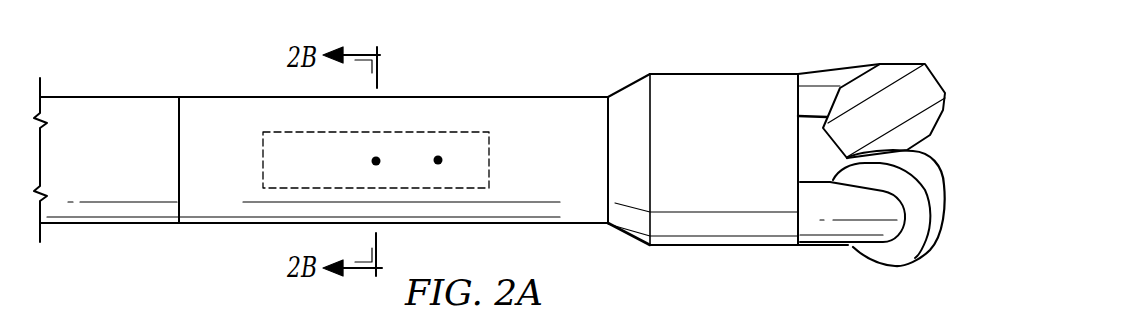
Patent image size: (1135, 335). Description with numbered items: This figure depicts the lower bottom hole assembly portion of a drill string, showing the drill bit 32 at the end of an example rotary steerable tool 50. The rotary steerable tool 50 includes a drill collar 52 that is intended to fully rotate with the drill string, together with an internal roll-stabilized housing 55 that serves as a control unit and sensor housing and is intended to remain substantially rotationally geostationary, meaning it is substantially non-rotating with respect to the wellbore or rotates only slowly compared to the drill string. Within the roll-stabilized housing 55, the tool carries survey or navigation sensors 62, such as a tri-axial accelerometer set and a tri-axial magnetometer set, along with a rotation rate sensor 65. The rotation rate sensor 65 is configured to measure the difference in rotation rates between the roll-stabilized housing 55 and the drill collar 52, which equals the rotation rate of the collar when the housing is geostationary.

The drill bit 32 is at (725, 73).
The rotary steerable tool 50 is at (233, 82).
The drill collar 52 is at (263, 224).
The roll-stabilized housing 55 is at (435, 132).
The survey or navigation sensors 62 is at (440, 160).
The rotation rate sensor 65 is at (374, 161).